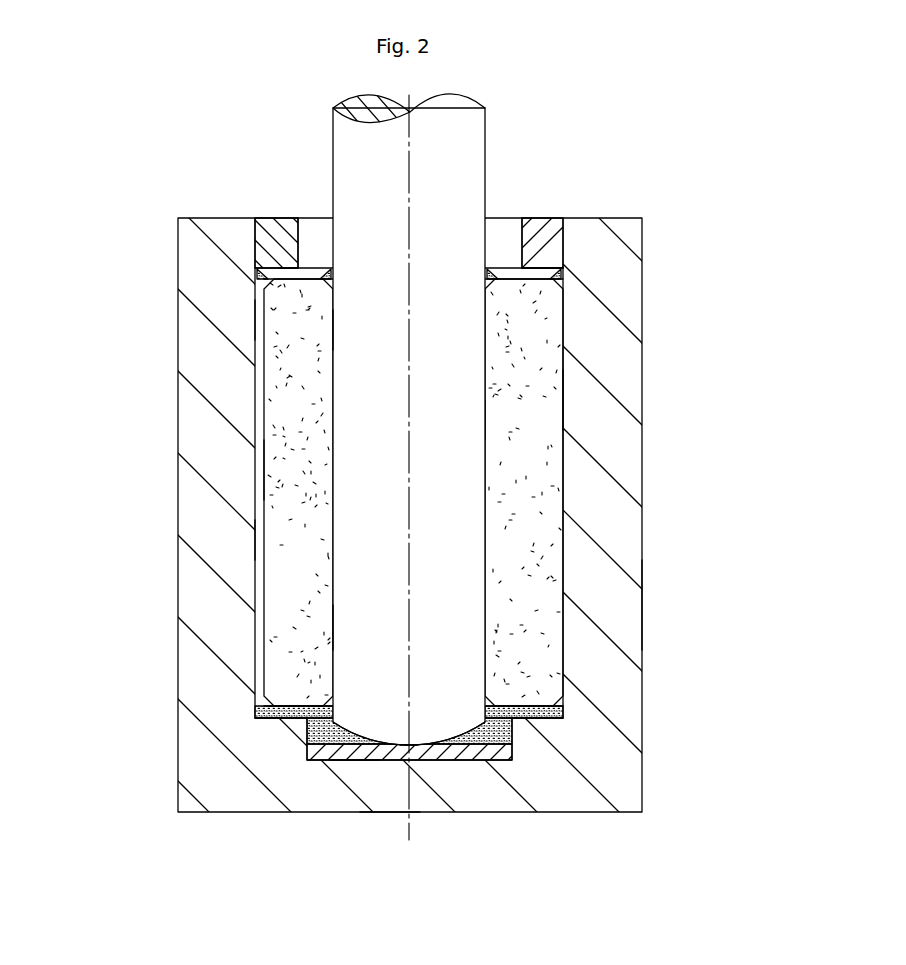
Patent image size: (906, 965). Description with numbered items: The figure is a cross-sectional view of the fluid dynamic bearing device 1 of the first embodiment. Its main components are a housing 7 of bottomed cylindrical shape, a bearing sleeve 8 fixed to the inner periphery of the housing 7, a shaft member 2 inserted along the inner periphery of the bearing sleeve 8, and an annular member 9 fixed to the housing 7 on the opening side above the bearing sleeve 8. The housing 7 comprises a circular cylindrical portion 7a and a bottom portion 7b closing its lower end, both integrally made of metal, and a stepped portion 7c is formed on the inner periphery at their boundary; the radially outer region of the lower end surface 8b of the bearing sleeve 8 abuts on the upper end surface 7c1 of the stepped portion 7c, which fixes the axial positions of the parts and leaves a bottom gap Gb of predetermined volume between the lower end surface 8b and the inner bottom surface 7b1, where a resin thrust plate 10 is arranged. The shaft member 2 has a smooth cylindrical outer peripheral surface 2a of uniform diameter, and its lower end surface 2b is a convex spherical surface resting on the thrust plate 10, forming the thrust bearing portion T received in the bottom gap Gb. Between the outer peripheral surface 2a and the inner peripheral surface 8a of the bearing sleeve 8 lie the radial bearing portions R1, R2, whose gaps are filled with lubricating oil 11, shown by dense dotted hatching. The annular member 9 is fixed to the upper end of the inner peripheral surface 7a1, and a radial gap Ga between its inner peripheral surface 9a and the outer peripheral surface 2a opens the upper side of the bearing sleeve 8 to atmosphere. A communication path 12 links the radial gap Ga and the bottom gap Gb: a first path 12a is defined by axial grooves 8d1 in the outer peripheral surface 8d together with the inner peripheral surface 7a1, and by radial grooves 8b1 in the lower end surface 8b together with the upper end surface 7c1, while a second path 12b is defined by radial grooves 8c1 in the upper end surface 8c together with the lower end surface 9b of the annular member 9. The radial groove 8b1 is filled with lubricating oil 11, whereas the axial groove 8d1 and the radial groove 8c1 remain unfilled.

The fluid dynamic bearing device 1 is at (651, 163).
The shaft member 2 is at (477, 420).
The outer peripheral surface of the shaft member 2a is at (333, 136).
The lower end surface of the shaft member 2b is at (490, 736).
The housing 7 is at (657, 375).
The cylindrical portion 7a is at (620, 609).
The inner peripheral surface of the housing 7a1 is at (562, 382).
The bottom portion 7b is at (388, 795).
The inner bottom surface of the housing 7b1 is at (350, 762).
The stepped portion 7c is at (280, 737).
The upper end surface of the stepped portion 7c1 is at (523, 718).
The bearing sleeve 8 is at (543, 550).
The inner peripheral surface of the bearing sleeve 8a is at (485, 420).
The lower end surface of the bearing sleeve 8b is at (295, 720).
The radial groove 8b1 is at (293, 718).
The upper end surface of the bearing sleeve 8c is at (267, 223).
The radial groove 8c1 is at (287, 268).
The outer peripheral surface of the bearing sleeve 8d is at (257, 473).
The axial groove 8d1 is at (262, 540).
The annular member 9 is at (545, 237).
The inner peripheral surface of the annular member 9a is at (298, 245).
The lower end surface of the annular member 9b is at (535, 270).
The thrust plate 10 is at (497, 753).
The lubricating oil 11 is at (497, 717).
The communication path 12 is at (108, 278).
The first path 12a is at (250, 325).
The second path 12b is at (278, 283).
The radial gap Ga is at (507, 226).
The bottom gap Gb is at (470, 750).
The radial bearing portion R1 is at (323, 333).
The radial bearing portion R2 is at (322, 632).
The thrust bearing portion T is at (414, 757).